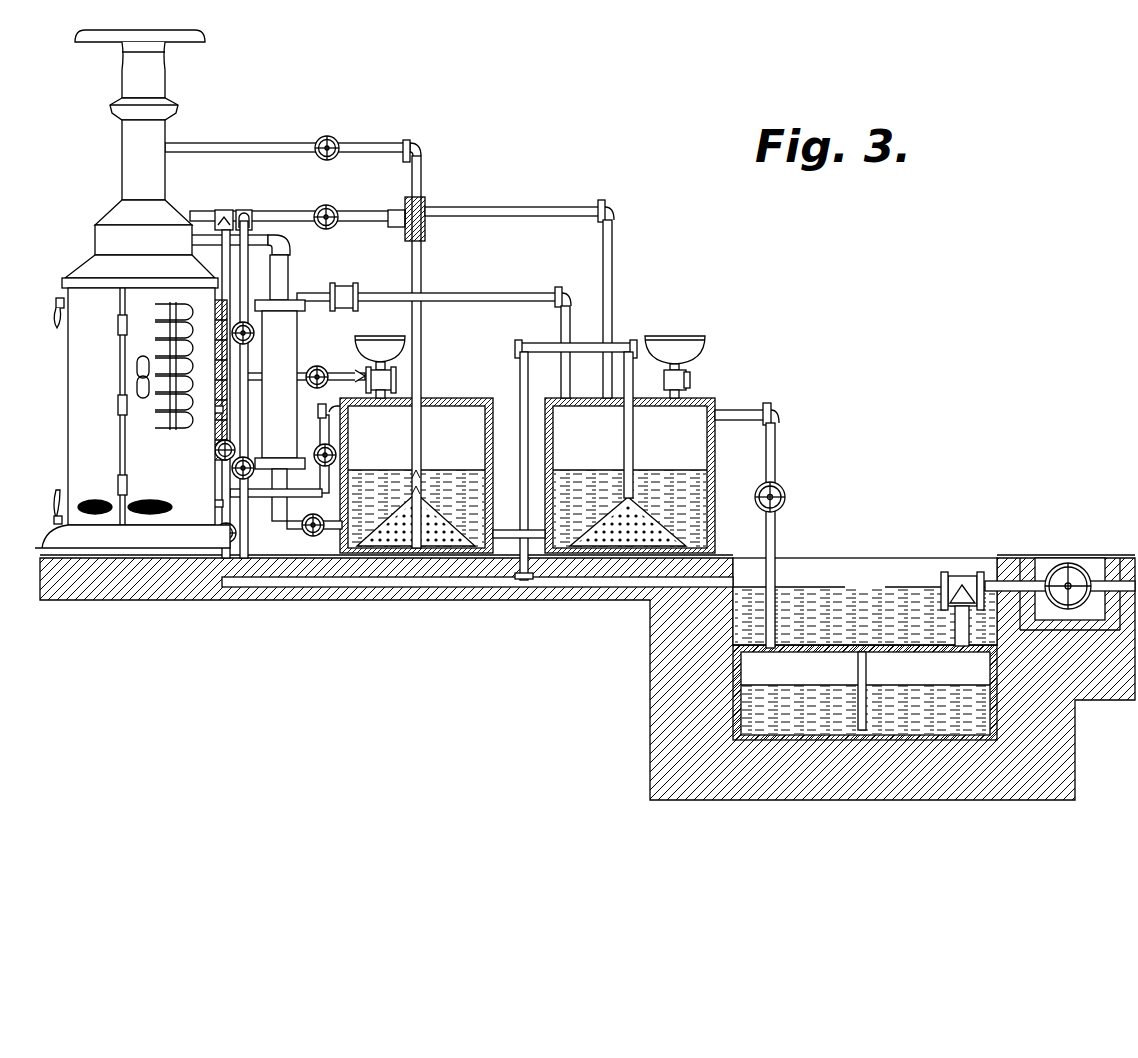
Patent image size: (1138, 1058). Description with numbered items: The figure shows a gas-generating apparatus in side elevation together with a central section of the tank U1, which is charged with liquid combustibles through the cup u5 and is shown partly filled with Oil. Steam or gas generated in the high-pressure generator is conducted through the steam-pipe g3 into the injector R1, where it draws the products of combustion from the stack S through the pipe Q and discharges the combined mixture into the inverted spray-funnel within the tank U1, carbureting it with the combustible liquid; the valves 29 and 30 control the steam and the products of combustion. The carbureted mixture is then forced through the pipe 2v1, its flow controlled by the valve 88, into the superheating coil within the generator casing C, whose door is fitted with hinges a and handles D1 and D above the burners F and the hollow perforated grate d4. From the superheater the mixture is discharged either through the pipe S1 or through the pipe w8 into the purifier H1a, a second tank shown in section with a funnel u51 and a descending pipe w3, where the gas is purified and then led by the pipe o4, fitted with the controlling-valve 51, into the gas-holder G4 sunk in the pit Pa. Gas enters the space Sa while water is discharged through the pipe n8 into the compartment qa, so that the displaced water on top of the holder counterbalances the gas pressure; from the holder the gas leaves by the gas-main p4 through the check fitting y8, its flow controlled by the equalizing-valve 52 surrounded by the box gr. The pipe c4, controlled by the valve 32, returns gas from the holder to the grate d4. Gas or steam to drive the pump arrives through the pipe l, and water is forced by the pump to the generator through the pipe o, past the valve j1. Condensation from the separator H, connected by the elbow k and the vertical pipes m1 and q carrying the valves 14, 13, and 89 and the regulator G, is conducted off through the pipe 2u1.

The stack S is at (140, 154).
The pipe Q is at (303, 331).
The valve 30 is at (327, 139).
The valve 29 is at (297, 228).
The steam-pipe g3 is at (376, 228).
The injector R1 is at (443, 201).
The pipe l is at (521, 291).
The pipe o is at (441, 335).
The valve j1 is at (344, 286).
The elbow pipe k is at (247, 259).
The separator H is at (280, 388).
The valve 14 is at (256, 333).
The valve 13 is at (317, 368).
The pipe S1 is at (320, 379).
The cup u5 is at (380, 341).
The funnel u51 is at (675, 355).
The tank U1 is at (416, 458).
The purifier H1a is at (659, 458).
The pipe w8 is at (446, 460).
The pipe w3 is at (646, 425).
The pipe 2u1 is at (415, 527).
The pipe 2v1 is at (305, 485).
The valve 88 is at (285, 450).
The valve 89 is at (251, 476).
The pipe m1 is at (213, 394).
The pipe q is at (250, 389).
The burner regulator G is at (200, 466).
The hollow perforated grate d4 is at (176, 467).
The valve 32 is at (216, 534).
The boiler casing C is at (132, 413).
The hinge a is at (111, 407).
The door handle D1 is at (43, 308).
The door handle D is at (40, 507).
The burner F is at (125, 515).
The pipe o4 is at (759, 525).
The controlling-valve 51 is at (787, 496).
The pit or shaft Pa is at (865, 583).
The pipe c4 is at (865, 579).
The check valve y8 is at (962, 602).
The equalizing-valve 52 is at (1068, 570).
The box gr is at (1070, 580).
The gas-main p4 is at (1043, 626).
The gas-holder G4 is at (587, 677).
The space Sa is at (865, 692).
The pipe n8 is at (875, 691).
The compartment qa is at (929, 710).
The oil label Oil is at (384, 433).